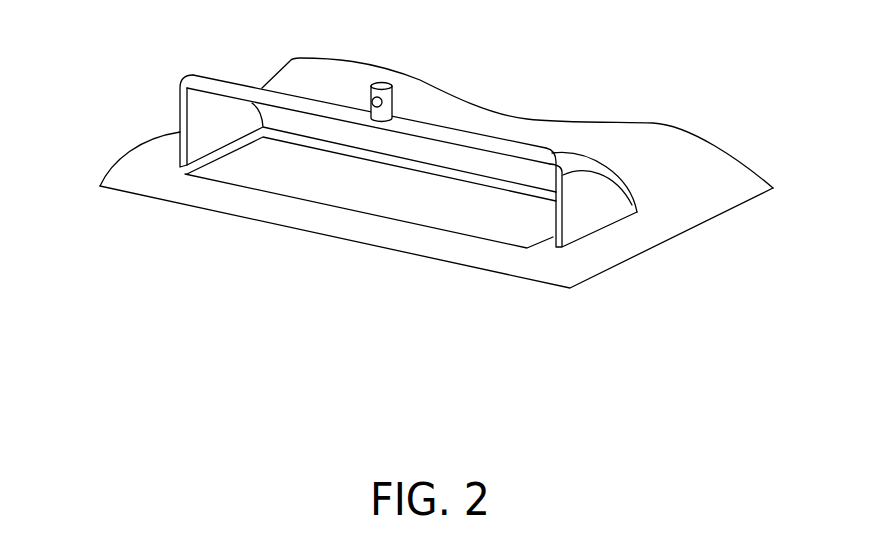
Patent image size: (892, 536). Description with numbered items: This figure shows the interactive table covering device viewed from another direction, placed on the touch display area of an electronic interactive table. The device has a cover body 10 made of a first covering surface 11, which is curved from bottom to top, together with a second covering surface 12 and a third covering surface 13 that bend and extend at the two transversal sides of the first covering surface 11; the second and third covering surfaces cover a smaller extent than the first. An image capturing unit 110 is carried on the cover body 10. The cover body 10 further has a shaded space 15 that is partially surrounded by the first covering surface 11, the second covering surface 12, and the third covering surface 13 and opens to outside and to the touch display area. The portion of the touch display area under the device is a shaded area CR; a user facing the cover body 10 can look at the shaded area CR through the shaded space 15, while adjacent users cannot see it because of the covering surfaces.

The cover body 10 is at (432, 134).
The first covering surface 11 is at (300, 88).
The image capturing unit 110 is at (383, 84).
The second covering surface 12 is at (180, 118).
The third covering surface 13 is at (593, 195).
The shaded space 15 is at (380, 198).
The shaded area CR is at (260, 190).